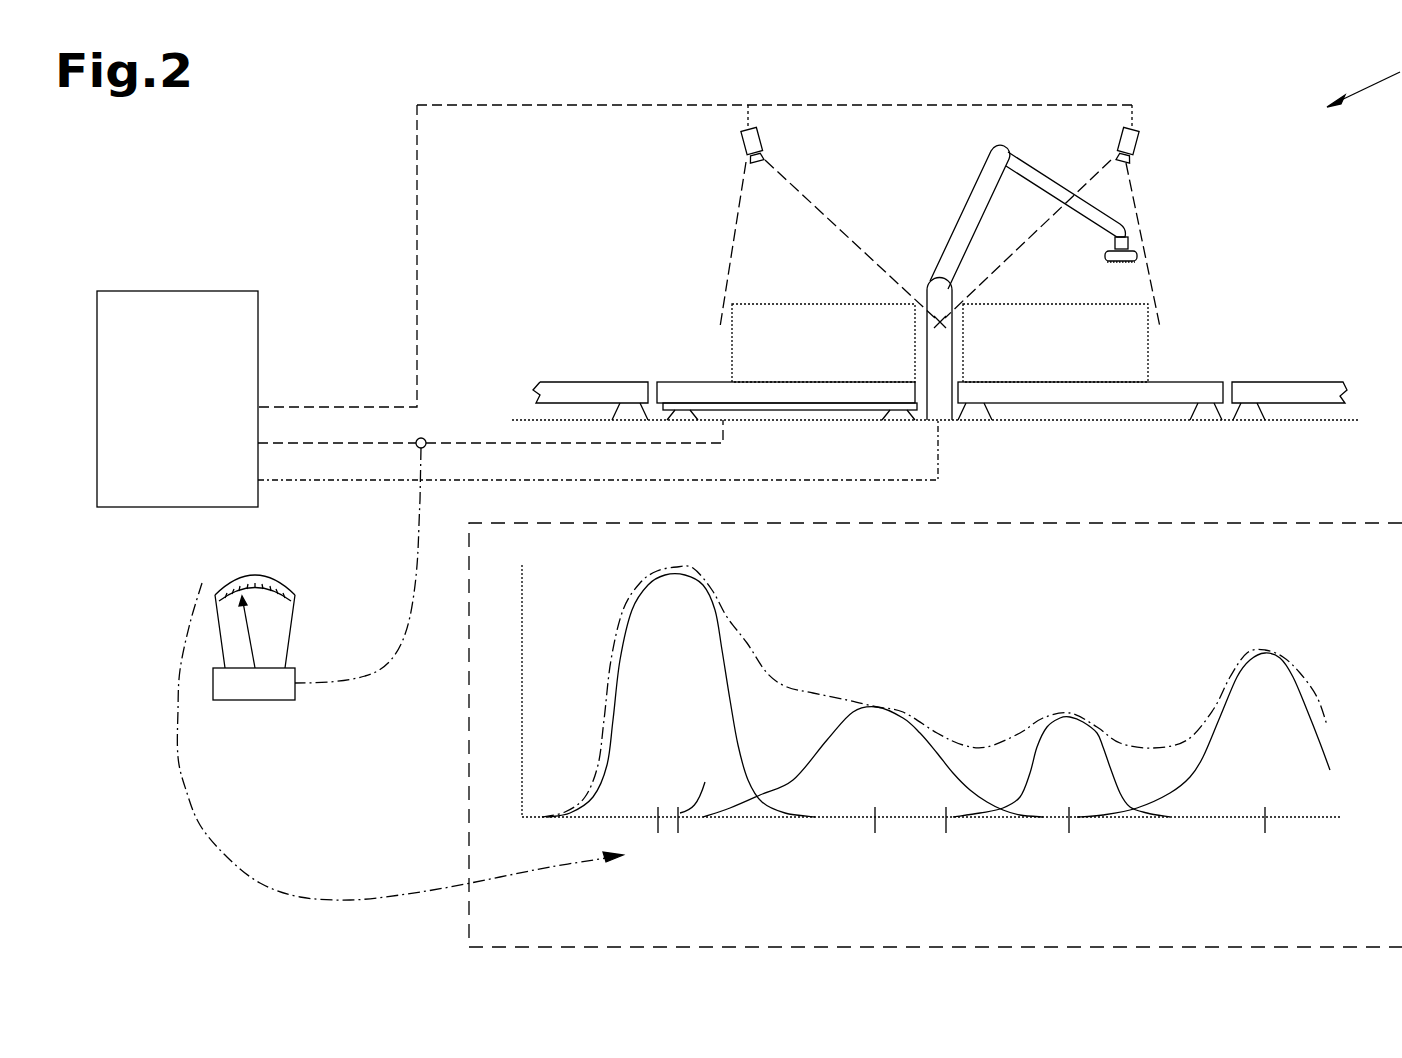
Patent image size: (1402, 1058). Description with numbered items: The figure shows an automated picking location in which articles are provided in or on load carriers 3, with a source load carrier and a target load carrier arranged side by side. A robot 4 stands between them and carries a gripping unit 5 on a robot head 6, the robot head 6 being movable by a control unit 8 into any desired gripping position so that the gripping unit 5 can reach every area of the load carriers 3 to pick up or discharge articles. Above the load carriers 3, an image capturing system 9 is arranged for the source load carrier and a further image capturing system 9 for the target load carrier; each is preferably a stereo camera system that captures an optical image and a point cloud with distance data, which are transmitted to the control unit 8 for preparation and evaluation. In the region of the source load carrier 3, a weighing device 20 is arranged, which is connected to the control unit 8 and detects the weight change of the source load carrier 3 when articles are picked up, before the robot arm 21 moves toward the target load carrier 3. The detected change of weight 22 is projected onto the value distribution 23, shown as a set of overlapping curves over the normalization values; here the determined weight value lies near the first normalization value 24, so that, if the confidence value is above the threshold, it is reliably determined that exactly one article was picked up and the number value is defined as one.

The load carrier 3 is at (815, 356).
The robot 4 is at (995, 279).
The gripping unit 5 is at (1137, 257).
The robot head 6 is at (1128, 241).
The control unit 8 is at (177, 290).
The image capturing system 9 is at (742, 141).
The weighing device 20 is at (796, 408).
The robot arm 21 is at (957, 245).
The change of weight 22 is at (250, 638).
The value distribution 23 is at (970, 564).
The normalization value µ1 24 is at (701, 783).